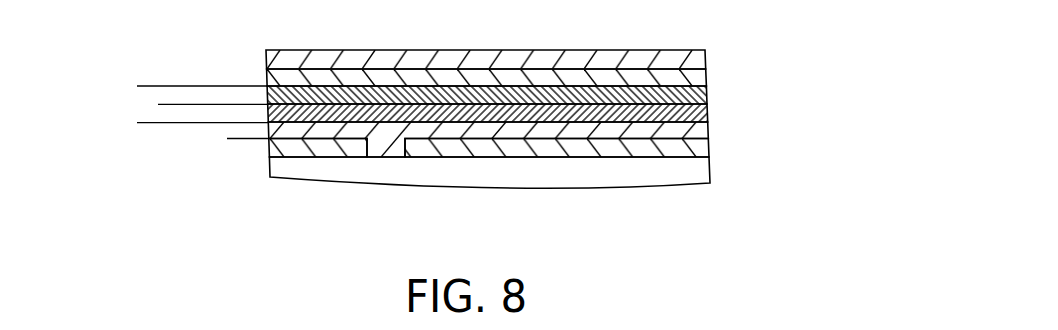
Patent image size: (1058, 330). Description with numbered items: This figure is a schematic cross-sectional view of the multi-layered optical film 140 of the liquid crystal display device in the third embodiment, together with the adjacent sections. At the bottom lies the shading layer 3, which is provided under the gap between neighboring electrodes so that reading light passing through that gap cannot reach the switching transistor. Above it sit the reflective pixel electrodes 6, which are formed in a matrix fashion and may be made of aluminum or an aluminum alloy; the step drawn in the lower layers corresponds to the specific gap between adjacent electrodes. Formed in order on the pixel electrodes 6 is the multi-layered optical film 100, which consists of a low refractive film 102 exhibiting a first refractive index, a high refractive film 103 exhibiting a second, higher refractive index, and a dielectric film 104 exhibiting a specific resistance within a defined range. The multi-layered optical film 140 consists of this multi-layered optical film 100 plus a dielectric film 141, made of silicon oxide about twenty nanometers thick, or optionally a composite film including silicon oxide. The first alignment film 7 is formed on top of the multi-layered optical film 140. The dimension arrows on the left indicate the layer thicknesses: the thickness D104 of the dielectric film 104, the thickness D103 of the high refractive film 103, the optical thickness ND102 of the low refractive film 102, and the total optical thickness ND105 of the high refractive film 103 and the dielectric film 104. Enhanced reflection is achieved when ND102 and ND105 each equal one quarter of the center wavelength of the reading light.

The first alignment film 7 is at (705, 58).
The dielectric film 141 is at (706, 77).
The dielectric film 104 is at (707, 93).
The high refractive film 103 is at (707, 112).
The low refractive film 102 is at (708, 127).
The reflective pixel electrodes 6 is at (709, 153).
The shading layer 3 is at (710, 173).
The multi-layered optical film 100 is at (788, 72).
The multi-layered optical film 140 is at (797, 50).
The thickness of layer 104 D104 is at (165, 124).
The total optical thickness ND105 is at (145, 86).
The thickness of layer 103 D103 is at (203, 78).
The optical thickness ND102 is at (240, 93).